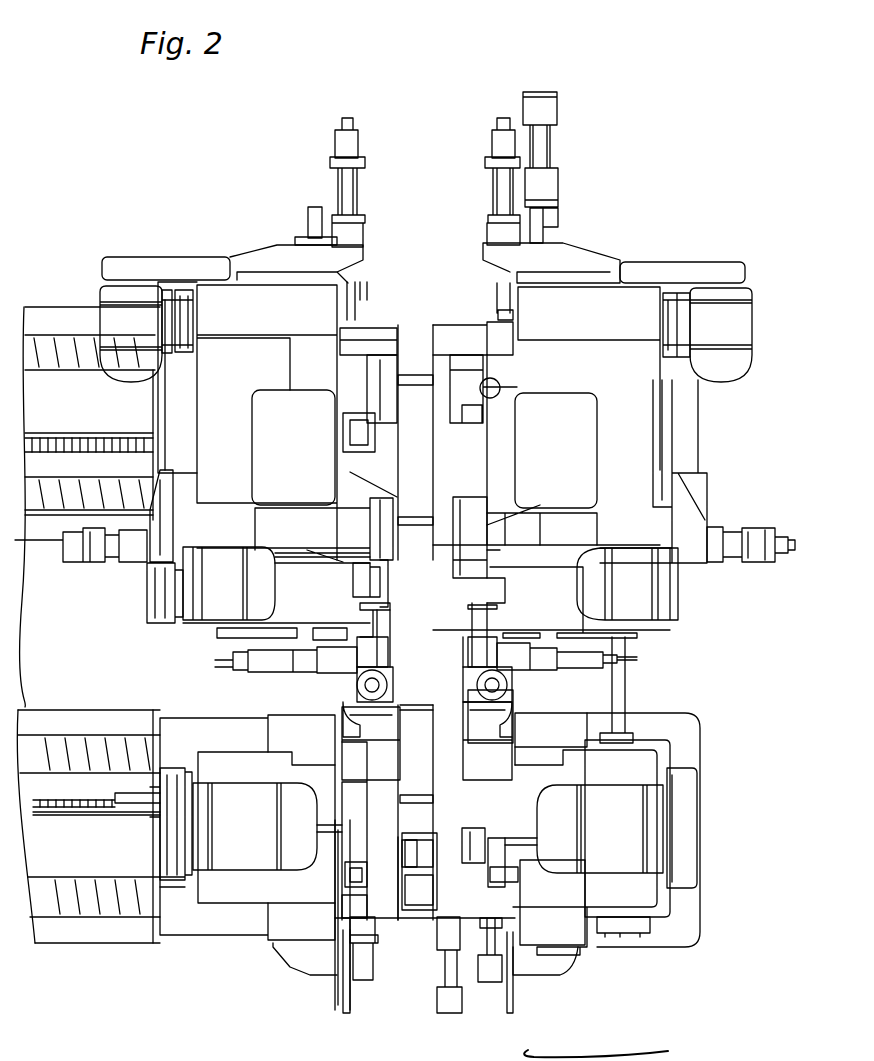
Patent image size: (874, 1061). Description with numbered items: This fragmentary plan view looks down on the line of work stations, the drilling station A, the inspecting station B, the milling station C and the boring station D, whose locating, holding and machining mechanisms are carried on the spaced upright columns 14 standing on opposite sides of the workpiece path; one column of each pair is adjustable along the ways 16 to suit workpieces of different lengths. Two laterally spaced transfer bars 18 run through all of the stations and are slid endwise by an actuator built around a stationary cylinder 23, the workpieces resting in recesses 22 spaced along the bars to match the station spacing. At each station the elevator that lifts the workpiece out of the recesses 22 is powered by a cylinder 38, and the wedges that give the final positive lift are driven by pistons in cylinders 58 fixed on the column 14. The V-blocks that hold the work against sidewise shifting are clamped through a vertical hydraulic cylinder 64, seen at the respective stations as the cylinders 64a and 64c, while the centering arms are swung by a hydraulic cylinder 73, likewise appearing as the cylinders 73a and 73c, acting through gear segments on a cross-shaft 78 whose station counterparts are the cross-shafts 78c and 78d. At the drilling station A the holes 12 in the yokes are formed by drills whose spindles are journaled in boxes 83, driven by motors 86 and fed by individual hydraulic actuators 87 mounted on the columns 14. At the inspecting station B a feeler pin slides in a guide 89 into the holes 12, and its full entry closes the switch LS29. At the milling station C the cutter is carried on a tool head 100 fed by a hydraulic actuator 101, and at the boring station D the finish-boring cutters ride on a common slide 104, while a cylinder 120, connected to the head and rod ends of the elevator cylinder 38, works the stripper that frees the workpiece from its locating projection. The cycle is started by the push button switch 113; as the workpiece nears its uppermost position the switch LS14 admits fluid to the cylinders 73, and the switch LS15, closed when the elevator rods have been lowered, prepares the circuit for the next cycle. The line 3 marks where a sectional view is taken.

The section line 3- 3 is at (400, 634).
The holes 12 is at (228, 670).
The upright columns 14 is at (323, 432).
The ways 16 is at (84, 345).
The transfer bars 18 is at (347, 1008).
The recesses 22 is at (346, 972).
The stationary cylinder 23 is at (552, 143).
The cylinder 38 is at (446, 970).
The cylinders 58 is at (372, 960).
The vertical hydraulic cylinder 64 is at (350, 878).
The hydraulic cylinder 64a is at (355, 458).
The hydraulic cylinder 64c is at (360, 596).
The hydraulic cylinder 73 is at (480, 838).
The hydraulic cylinder 73a is at (470, 426).
The hydraulic cylinder 73c is at (465, 568).
The cross-shaft 78 is at (418, 797).
The cross-shaft 78c is at (423, 518).
The cross-shaft 78d is at (424, 378).
The boxes 83 is at (345, 907).
The motors 86 is at (250, 792).
The hydraulic actuators 87 is at (277, 707).
The guide 89 is at (482, 652).
The tool head 100 is at (190, 628).
The hydraulic actuator 101 is at (749, 535).
The common slide 104 is at (398, 350).
The push button switch 113 is at (638, 938).
The cylinder 120 is at (498, 385).
The switch LS14 is at (430, 897).
The switch LS15 is at (430, 880).
The switch LS29 is at (305, 673).
The drilling station A is at (700, 839).
The inspecting station B is at (636, 688).
The milling station C is at (578, 524).
The boring station D is at (568, 376).